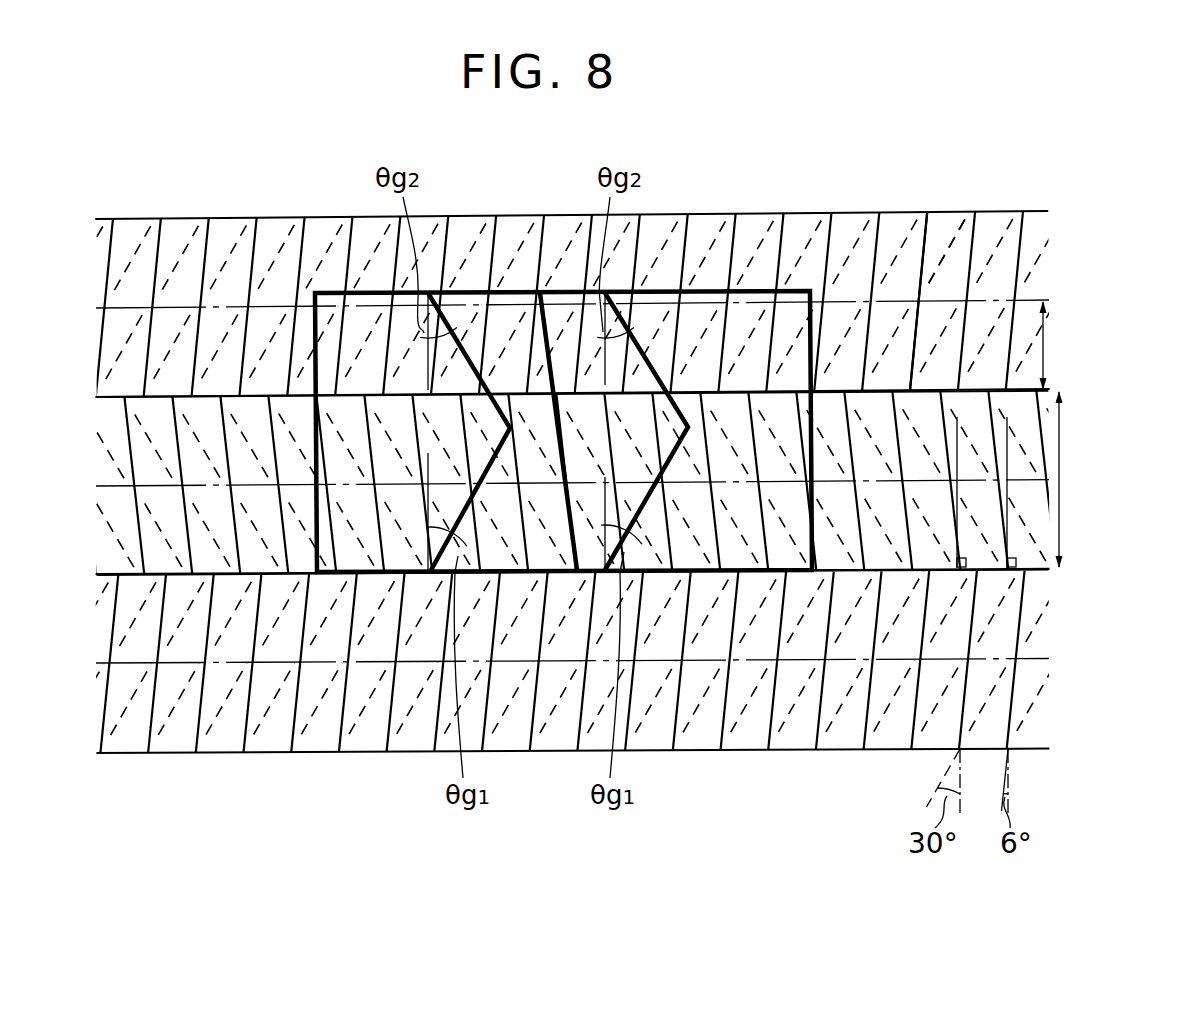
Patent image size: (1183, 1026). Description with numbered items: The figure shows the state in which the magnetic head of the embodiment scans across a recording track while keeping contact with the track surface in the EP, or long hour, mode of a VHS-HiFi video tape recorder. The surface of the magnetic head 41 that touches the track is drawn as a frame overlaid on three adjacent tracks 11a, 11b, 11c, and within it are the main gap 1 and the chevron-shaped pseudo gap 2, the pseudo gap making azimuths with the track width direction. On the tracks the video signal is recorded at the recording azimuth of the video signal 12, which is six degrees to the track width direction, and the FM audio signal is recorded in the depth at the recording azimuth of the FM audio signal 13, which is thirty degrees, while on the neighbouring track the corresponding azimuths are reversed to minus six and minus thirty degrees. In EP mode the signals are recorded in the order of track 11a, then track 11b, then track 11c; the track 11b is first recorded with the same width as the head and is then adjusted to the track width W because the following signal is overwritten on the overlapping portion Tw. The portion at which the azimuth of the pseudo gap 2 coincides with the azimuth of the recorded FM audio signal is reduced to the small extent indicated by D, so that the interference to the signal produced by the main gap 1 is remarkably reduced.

The main gap 1 is at (545, 292).
The pseudo gap 2 is at (460, 291).
The surface of the magnetic head 41 is at (788, 310).
The recording azimuth of the video signal 12 is at (925, 237).
The recording azimuth of the FM audio signal 13 is at (964, 246).
The track 11a is at (1064, 675).
The track 11b is at (1074, 512).
The track 11c is at (1072, 309).
The overlapping portion Tw is at (1044, 355).
The track width W is at (1075, 479).
The portion of azimuth correspondence D is at (492, 398).